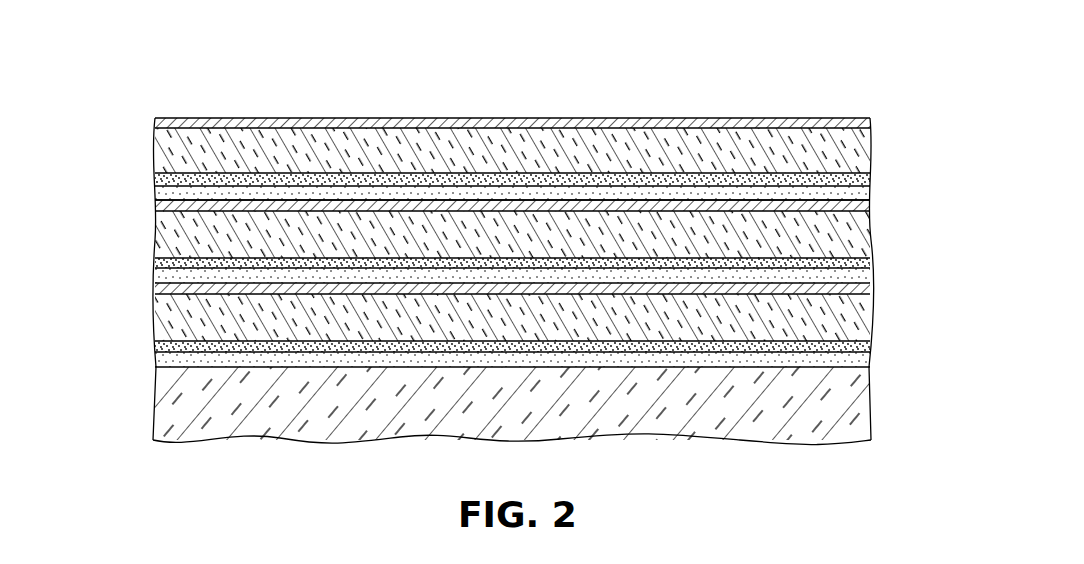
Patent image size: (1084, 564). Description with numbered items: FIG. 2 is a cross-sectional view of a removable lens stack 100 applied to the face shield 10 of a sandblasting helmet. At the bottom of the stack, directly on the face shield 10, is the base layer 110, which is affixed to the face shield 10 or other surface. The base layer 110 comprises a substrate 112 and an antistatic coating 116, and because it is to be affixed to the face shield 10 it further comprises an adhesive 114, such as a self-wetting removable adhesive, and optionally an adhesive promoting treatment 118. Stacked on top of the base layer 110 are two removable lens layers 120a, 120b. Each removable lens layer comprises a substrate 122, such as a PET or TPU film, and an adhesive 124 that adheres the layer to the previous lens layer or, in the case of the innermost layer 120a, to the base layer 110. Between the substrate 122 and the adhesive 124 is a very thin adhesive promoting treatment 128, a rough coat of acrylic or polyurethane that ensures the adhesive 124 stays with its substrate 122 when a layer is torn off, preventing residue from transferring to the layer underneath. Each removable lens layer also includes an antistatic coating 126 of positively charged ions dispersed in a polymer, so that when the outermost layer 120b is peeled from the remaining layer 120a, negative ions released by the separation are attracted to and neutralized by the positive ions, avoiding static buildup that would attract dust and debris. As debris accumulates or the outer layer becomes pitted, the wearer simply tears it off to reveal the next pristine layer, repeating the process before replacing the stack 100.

The removable lens stack 100 is at (838, 75).
The face shield 10 is at (871, 405).
The base layer 110 is at (140, 283).
The removable lens layer 120a is at (140, 201).
The removable lens layer 120b is at (140, 118).
The substrate 112 is at (853, 313).
The adhesive 114 is at (860, 363).
The antistatic coating 116 is at (860, 289).
The adhesive promoting treatment 118 is at (860, 348).
The substrate 122 is at (864, 226).
The adhesive 124 is at (860, 274).
The antistatic coating 126 is at (874, 206).
The adhesive promoting treatment 128 is at (864, 263).